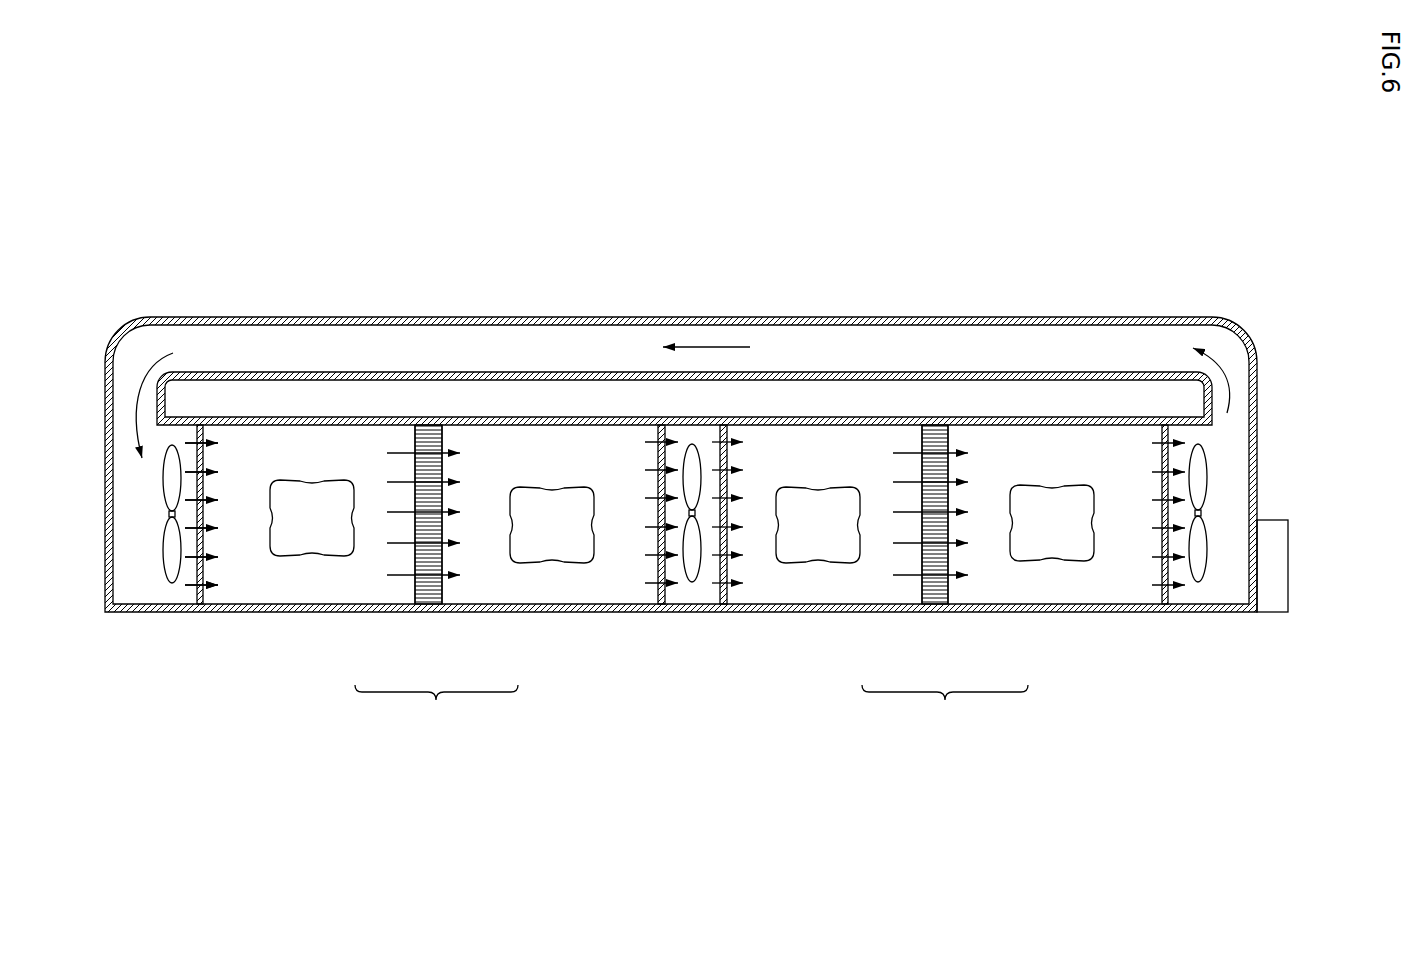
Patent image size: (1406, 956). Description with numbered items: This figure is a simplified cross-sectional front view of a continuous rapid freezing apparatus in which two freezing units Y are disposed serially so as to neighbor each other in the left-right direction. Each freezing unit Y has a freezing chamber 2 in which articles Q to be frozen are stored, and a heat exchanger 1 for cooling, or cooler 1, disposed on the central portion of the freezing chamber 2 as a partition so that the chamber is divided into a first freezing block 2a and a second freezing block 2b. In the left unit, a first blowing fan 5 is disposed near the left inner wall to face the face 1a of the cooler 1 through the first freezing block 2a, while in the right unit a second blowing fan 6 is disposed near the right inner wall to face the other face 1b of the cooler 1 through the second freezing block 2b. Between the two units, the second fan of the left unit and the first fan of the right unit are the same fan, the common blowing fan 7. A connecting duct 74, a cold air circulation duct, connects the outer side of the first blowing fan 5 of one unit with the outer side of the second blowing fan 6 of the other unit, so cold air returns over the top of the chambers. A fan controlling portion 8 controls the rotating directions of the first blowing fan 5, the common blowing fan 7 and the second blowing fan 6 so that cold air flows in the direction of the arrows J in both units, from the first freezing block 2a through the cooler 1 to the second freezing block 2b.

The heat exchanger for cooling 1 is at (447, 440).
The face of the cooler 1a is at (412, 470).
The other face of the cooler 1b is at (446, 470).
The freezing chamber 2 is at (691, 705).
The first freezing block 2a is at (368, 582).
The second freezing block 2b is at (515, 582).
The first blowing fan 5 is at (158, 573).
The second blowing fan 6 is at (1192, 586).
The common blowing fan 7 is at (695, 582).
The fan controlling portion 8 is at (1268, 518).
The connecting duct 74 is at (778, 327).
The article to be frozen Q is at (310, 481).
The arrows J is at (212, 528).
The freezing unit Y is at (290, 622).